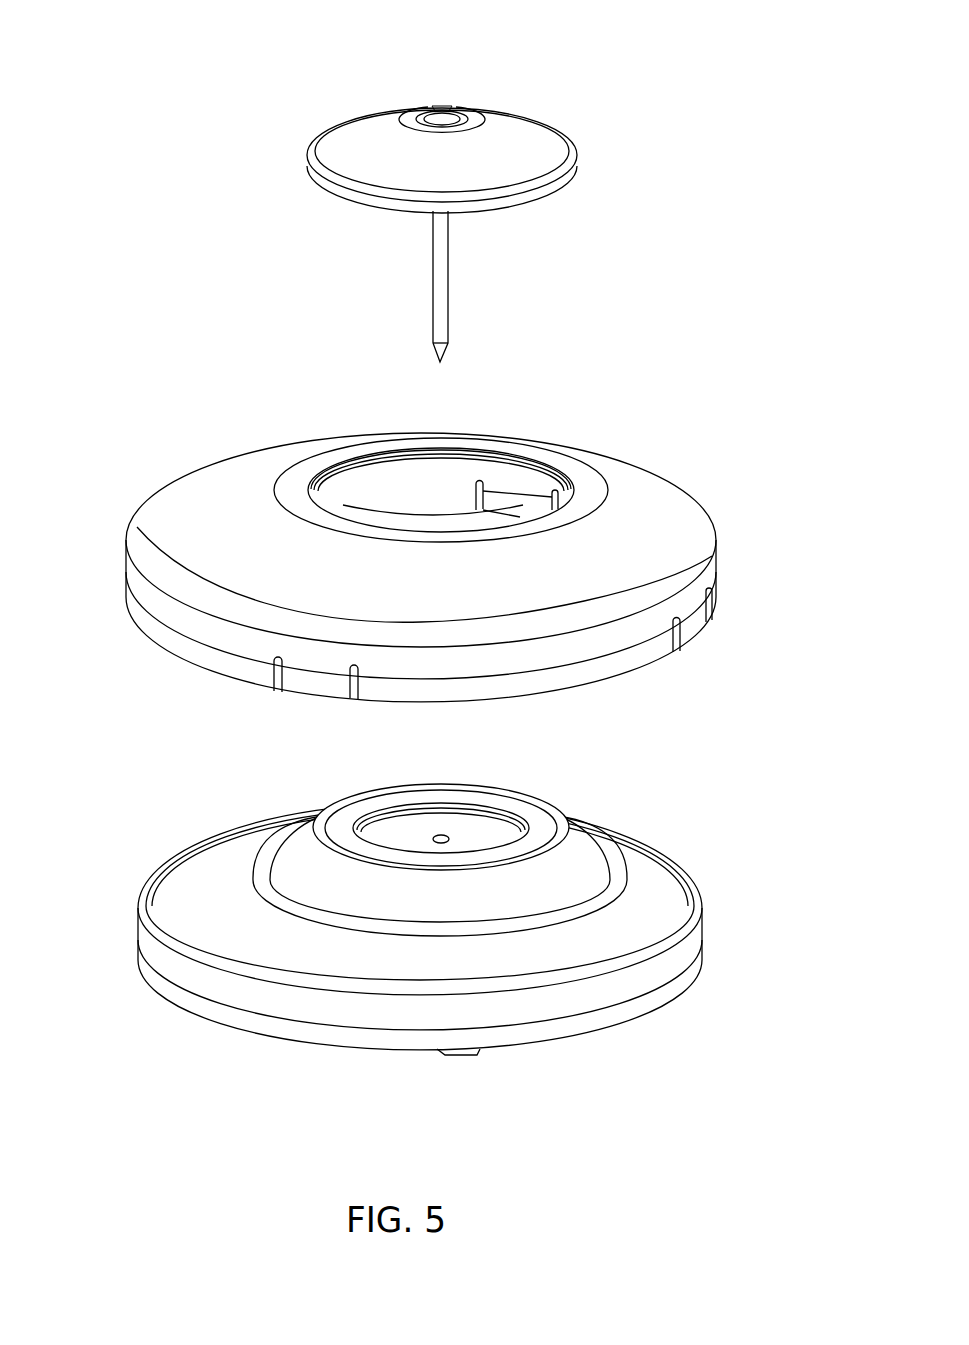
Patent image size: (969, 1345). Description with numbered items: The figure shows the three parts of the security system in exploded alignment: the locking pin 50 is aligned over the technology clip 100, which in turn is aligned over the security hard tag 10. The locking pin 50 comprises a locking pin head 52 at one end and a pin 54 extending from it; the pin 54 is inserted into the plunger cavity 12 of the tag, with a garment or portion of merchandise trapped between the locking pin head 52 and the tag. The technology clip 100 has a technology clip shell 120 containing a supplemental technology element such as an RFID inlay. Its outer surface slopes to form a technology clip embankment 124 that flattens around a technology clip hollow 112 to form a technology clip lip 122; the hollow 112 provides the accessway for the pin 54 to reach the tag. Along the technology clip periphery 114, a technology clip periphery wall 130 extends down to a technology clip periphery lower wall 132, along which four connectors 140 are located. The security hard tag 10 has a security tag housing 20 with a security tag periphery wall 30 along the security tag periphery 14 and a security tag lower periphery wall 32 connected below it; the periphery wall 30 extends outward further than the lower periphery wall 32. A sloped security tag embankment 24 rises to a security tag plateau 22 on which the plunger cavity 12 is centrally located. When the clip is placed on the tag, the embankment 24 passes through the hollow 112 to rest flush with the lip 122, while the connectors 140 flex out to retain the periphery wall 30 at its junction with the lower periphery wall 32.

The security hard tag 10 is at (128, 1001).
The plunger cavity 12 is at (443, 835).
The security tag periphery 14 is at (140, 905).
The security tag housing 20 is at (697, 912).
The security tag plateau 22 is at (400, 830).
The security tag embankment 24 is at (580, 848).
The security tag periphery wall 30 is at (608, 995).
The security tag lower periphery wall 32 is at (246, 1018).
The locking pin 50 is at (349, 80).
The locking pin head 52 is at (318, 135).
The pin 54 is at (432, 280).
The technology clip 100 is at (150, 670).
The technology clip hollow 112 is at (370, 487).
The technology clip periphery 114 is at (713, 557).
The technology clip shell 120 is at (580, 441).
The technology clip lip 122 is at (290, 487).
The technology clip embankment 124 is at (640, 502).
The technology clip periphery wall 130 is at (135, 579).
The technology clip periphery lower wall 132 is at (580, 680).
The connectors 140 is at (686, 633).